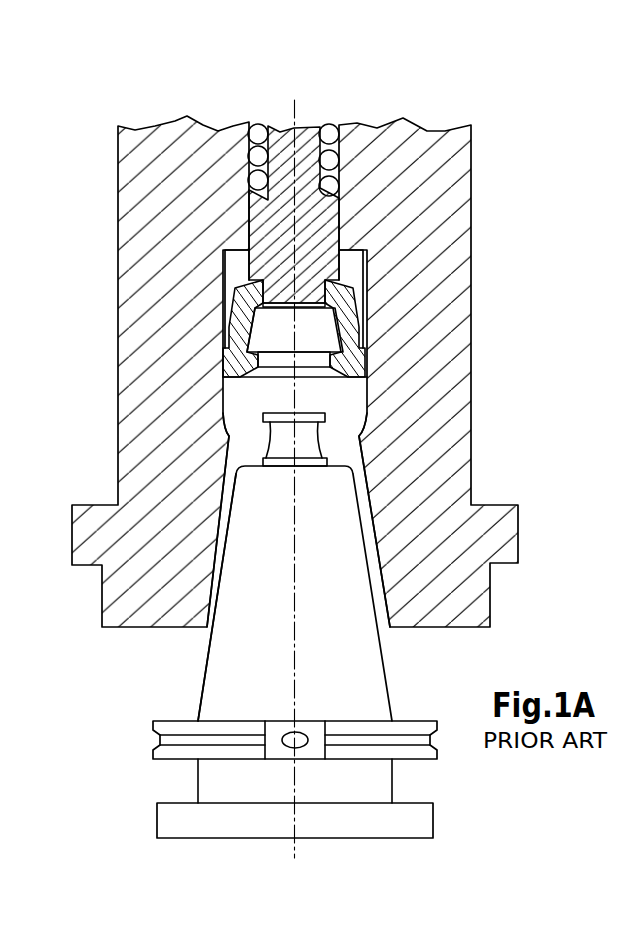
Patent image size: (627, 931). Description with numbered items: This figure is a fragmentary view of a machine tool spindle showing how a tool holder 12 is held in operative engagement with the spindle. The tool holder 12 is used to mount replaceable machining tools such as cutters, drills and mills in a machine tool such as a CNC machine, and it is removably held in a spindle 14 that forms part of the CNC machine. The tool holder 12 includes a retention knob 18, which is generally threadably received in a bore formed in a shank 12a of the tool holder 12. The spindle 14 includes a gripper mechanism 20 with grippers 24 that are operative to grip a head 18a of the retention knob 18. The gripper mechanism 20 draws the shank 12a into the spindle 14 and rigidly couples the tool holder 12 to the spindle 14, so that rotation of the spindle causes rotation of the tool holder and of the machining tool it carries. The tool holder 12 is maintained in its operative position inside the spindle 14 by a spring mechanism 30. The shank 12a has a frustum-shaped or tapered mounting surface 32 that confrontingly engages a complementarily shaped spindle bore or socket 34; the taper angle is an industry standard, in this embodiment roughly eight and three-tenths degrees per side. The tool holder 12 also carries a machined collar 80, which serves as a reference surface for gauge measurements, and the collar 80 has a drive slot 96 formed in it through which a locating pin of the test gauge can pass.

The tool holder 12 is at (260, 742).
The shank 12a is at (203, 688).
The spindle 14 is at (480, 277).
The retention knob 18 is at (306, 387).
The head 18a is at (270, 413).
The gripper mechanism 20 is at (374, 245).
The grippers 24 is at (243, 318).
The spring mechanism 30 is at (324, 115).
The tapered mounting surface 32 is at (257, 674).
The spindle bore 34 is at (372, 494).
The collar 80 is at (407, 721).
The drive slot 96 is at (325, 722).